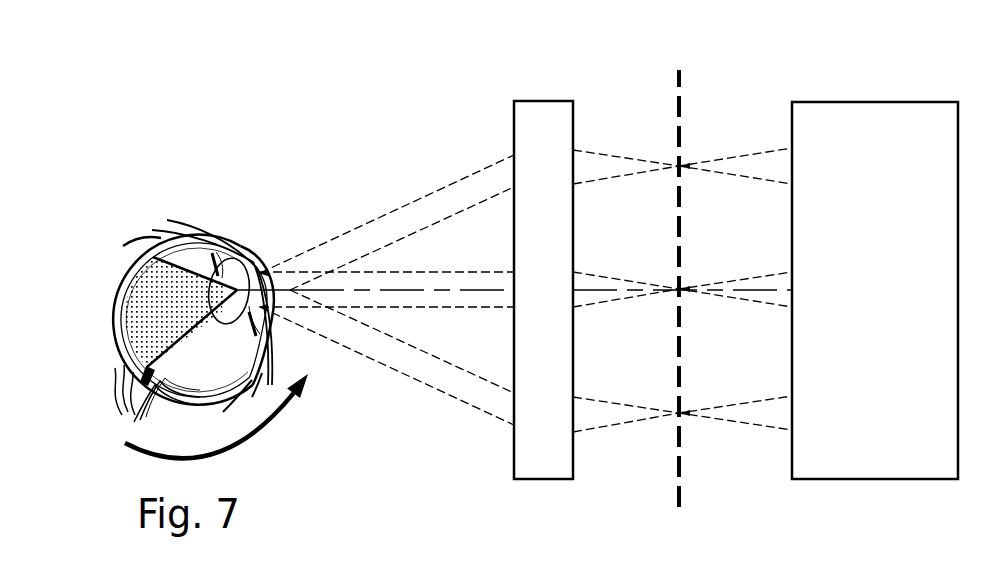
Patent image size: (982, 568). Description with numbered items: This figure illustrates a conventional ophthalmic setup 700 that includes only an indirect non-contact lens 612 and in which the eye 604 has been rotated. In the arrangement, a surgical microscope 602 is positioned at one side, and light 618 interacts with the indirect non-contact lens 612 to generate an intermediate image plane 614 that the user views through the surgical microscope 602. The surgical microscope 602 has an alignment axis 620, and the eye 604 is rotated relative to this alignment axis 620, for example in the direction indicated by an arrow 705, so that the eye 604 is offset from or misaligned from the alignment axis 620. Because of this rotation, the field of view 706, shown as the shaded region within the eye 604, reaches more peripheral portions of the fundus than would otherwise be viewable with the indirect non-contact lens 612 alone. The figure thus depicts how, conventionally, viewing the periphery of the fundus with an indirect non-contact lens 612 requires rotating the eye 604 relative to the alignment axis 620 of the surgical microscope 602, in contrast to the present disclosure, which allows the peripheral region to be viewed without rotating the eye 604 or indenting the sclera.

The ophthalmic setup 700 is at (247, 69).
The surgical microscope 602 is at (851, 306).
The eye 604 is at (153, 322).
The indirect non-contact lens 612 is at (543, 101).
The intermediate image plane 614 is at (683, 82).
The light 618 is at (392, 210).
The alignment axis 620 is at (477, 287).
The arrow 705 is at (267, 432).
The field of view 706 is at (135, 303).